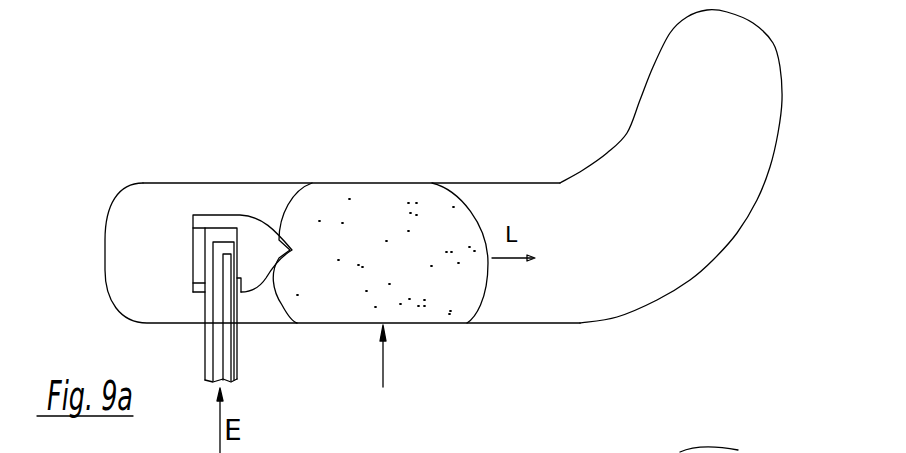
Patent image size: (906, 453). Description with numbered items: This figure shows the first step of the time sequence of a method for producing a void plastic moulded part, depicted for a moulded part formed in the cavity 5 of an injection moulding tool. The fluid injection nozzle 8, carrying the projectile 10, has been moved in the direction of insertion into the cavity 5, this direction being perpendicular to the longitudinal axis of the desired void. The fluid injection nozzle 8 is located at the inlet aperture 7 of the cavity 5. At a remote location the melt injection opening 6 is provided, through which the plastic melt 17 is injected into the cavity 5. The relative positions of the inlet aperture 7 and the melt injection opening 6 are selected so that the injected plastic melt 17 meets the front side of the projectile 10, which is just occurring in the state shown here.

The cavity 5 is at (681, 212).
The melt injection opening 6 is at (392, 360).
The inlet aperture 7 is at (195, 370).
The fluid injection nozzle 8 is at (238, 370).
The projectile 10 is at (257, 242).
The plastic melt 17 is at (377, 222).